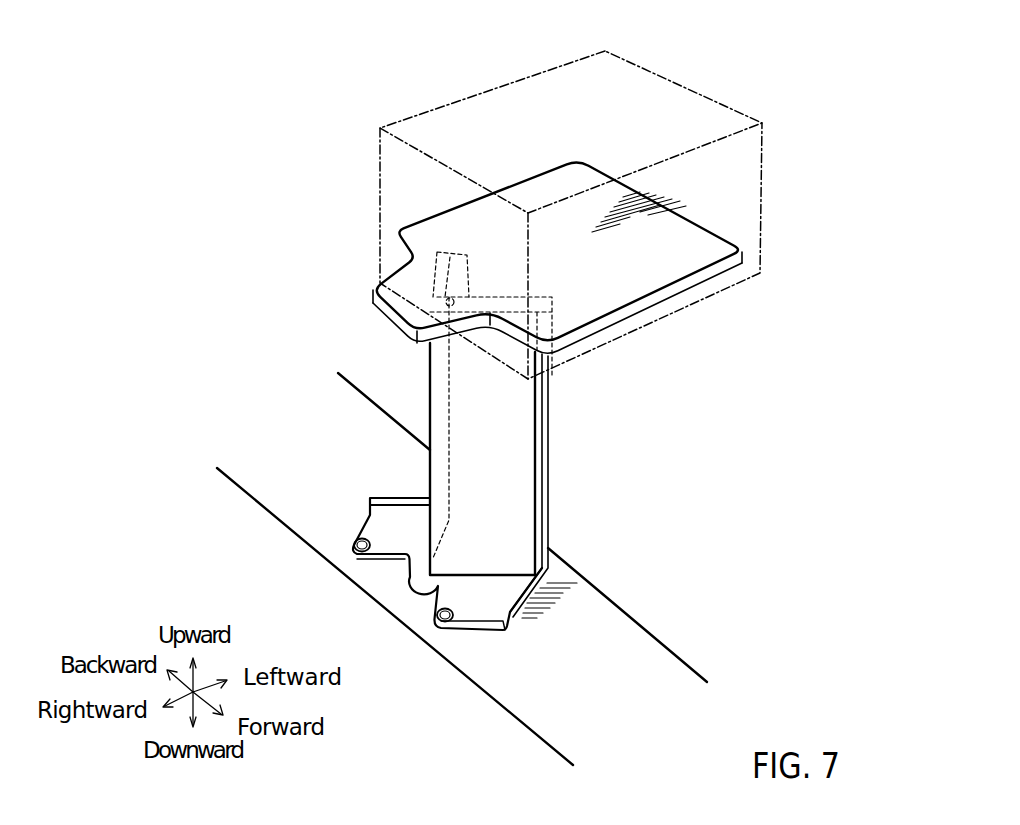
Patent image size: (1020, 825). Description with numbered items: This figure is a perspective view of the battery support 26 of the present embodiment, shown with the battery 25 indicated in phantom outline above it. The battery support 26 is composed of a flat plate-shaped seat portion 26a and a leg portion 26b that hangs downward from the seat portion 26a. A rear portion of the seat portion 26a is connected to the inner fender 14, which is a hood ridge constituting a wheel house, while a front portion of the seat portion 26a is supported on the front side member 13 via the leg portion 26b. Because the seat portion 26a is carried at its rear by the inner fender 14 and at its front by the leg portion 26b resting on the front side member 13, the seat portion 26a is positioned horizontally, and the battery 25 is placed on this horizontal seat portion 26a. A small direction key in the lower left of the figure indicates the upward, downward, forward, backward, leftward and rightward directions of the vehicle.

The front side member 13 is at (588, 692).
The inner fender 14 is at (675, 382).
The battery 25 is at (587, 113).
The battery support 26 is at (418, 422).
The seat portion 26a is at (642, 280).
The leg portion 26b is at (505, 480).